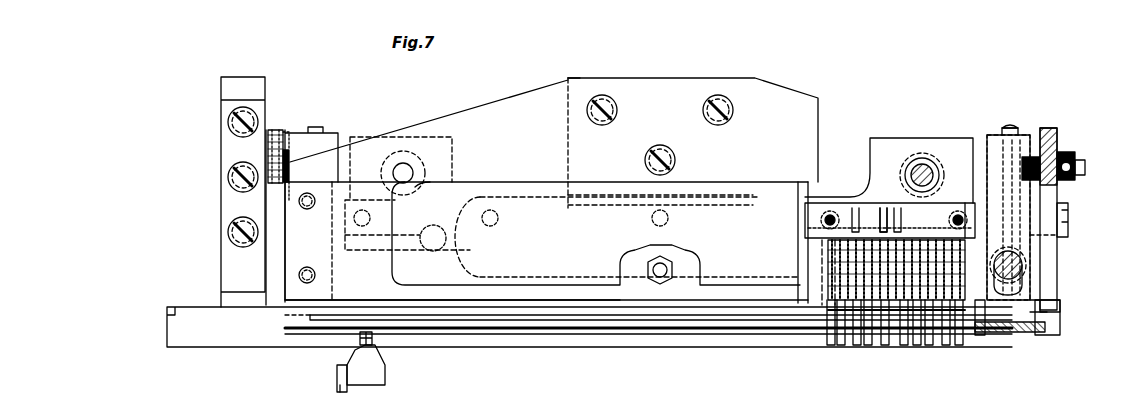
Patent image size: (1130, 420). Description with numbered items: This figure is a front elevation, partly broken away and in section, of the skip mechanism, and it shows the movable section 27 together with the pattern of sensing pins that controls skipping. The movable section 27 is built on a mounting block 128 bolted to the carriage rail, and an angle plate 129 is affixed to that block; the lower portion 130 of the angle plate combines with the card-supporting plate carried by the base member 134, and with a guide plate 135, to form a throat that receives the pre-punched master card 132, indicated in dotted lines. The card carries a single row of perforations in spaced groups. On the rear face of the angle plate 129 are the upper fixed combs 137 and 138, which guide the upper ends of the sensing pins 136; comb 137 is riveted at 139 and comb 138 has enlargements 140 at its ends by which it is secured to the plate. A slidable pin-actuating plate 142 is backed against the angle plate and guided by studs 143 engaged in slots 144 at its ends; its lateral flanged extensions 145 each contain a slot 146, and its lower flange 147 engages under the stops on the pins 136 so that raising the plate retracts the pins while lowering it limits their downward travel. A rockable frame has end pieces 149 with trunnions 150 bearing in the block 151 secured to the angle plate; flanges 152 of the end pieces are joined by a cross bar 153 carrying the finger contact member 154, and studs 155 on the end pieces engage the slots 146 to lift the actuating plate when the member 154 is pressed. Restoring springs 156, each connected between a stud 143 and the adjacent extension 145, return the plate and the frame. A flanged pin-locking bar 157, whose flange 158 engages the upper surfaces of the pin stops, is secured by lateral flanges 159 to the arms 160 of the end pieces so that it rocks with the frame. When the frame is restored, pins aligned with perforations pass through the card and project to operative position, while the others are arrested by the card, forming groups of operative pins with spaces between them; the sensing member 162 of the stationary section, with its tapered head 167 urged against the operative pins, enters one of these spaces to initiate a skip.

The movable section 27 is at (802, 92).
The mounting block 128 is at (568, 90).
The angle plate 129 is at (528, 95).
The lower portion of angle plate 130 is at (708, 312).
The pre-punched master card 132 is at (1005, 333).
The base member 134 is at (517, 330).
The guide plate 135 is at (968, 335).
The sensing pins 136 is at (358, 348).
The upper fixed comb 137 is at (842, 206).
The upper fixed comb 138 is at (877, 206).
The rivets 139 is at (824, 219).
The enlargements 140 is at (372, 140).
The pin-actuating plate 142 is at (833, 300).
The studs 143 is at (1020, 272).
The slots 144 is at (1035, 312).
The lateral flanged extensions 145 is at (330, 140).
The slot 146 is at (1050, 150).
The flange 147 is at (876, 335).
The end pieces 149 is at (276, 135).
The trunnions 150 is at (292, 142).
The block 151 is at (240, 260).
The flanges 152 is at (340, 284).
The cross bar 153 is at (478, 300).
The finger contact member 154 is at (600, 272).
The studs 155 is at (1060, 156).
The restoring springs 156 is at (1015, 128).
The pin-locking bar 157 is at (965, 206).
The flange 158 is at (853, 332).
The lateral flanges 159 is at (1045, 268).
The arms 160 is at (1062, 236).
The sensing member 162 is at (343, 392).
The tapered head 167 is at (372, 373).